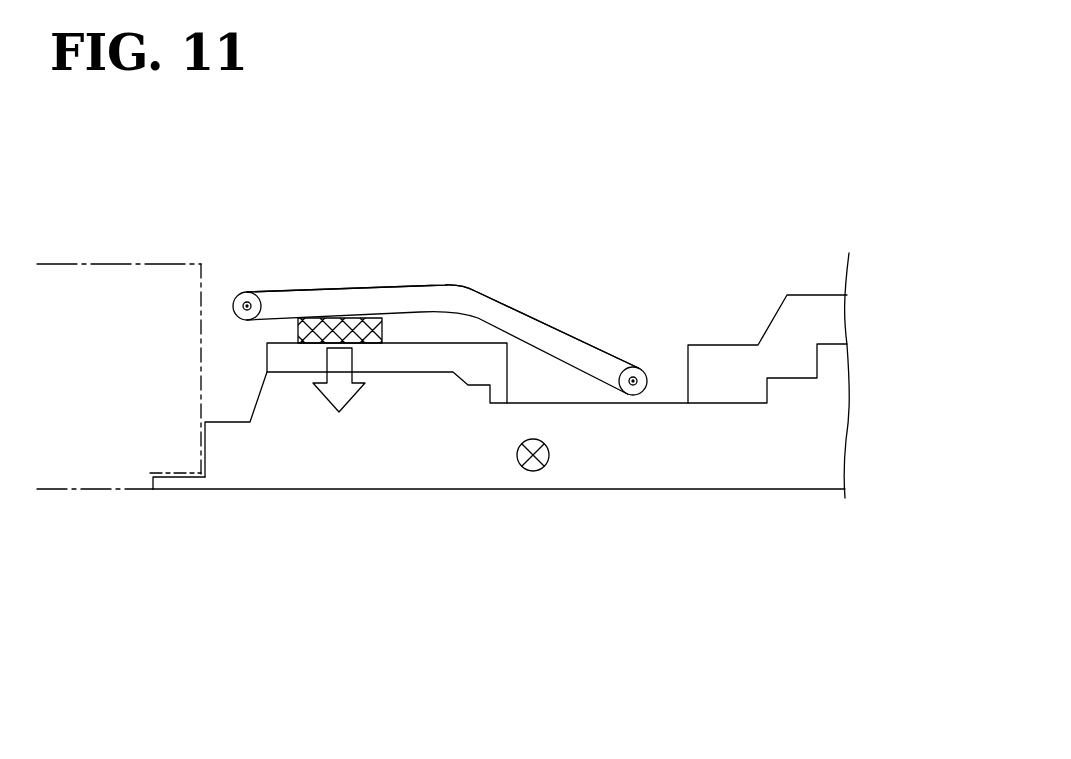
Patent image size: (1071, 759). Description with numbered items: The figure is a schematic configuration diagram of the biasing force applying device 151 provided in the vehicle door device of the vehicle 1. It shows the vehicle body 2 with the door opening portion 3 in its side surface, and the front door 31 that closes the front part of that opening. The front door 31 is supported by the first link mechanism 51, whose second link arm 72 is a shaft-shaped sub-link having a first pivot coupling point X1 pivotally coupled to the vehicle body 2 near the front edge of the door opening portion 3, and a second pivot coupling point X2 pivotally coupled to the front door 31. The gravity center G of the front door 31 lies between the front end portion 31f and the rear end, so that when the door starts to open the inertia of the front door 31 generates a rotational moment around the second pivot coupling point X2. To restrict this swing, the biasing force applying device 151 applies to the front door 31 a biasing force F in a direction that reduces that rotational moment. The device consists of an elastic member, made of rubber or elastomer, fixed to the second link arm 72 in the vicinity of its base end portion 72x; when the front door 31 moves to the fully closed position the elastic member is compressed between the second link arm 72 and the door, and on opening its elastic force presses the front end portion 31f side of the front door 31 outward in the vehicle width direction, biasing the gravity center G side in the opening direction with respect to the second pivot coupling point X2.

The vehicle 1 is at (75, 607).
The vehicle body 2 is at (100, 493).
The door opening portion 3 is at (203, 367).
The front door 31 is at (600, 490).
The front end portion 31f is at (197, 490).
The first link mechanism 51 is at (605, 243).
The second link arm 72 is at (465, 286).
The base end portion 72x is at (325, 290).
The first pivot coupling point X1 is at (245, 292).
The second pivot coupling point X2 is at (634, 372).
The biasing force applying device 151 is at (382, 321).
The biasing force F is at (319, 399).
The gravity center G is at (528, 470).